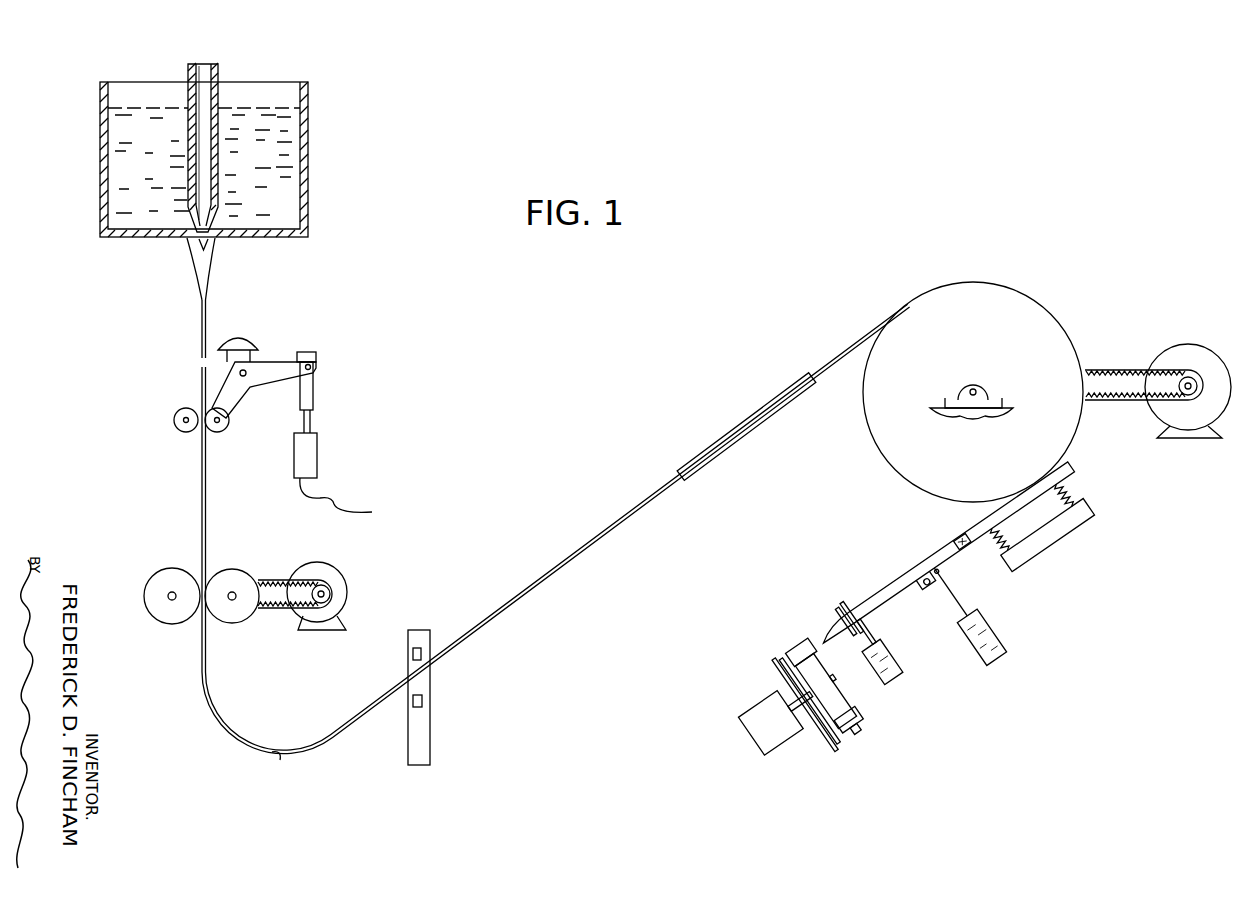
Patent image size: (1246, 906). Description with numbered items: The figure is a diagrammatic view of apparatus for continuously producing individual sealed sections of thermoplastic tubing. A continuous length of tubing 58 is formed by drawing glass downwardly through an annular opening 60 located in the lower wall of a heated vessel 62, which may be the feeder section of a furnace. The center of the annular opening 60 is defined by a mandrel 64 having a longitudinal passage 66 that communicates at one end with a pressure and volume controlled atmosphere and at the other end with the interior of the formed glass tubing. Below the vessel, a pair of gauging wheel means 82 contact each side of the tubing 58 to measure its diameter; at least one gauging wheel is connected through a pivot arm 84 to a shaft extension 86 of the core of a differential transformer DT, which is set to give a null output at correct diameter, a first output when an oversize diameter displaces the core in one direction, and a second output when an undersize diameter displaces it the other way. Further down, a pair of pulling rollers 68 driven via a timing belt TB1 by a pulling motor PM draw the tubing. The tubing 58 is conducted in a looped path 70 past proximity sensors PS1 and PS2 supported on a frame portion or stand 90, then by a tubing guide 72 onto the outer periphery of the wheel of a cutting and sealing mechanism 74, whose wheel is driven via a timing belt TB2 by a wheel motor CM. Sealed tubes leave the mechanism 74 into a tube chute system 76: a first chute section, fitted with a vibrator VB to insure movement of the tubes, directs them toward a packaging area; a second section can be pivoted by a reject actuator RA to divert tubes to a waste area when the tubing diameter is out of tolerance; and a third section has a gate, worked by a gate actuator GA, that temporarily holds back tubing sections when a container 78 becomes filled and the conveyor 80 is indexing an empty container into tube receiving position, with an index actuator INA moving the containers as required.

The tubing 58 is at (200, 492).
The annular opening 60 is at (209, 241).
The heated vessel 62 is at (308, 170).
The mandrel 64 is at (188, 72).
The longitudinal passage 66 is at (204, 74).
The pulling rollers 68 is at (150, 572).
The looped path 70 is at (280, 756).
The tubing guide 72 is at (712, 440).
The cutting and sealing mechanism 74 is at (1025, 278).
The tube chute system 76 is at (918, 542).
The container 78 is at (800, 640).
The conveyor 80 is at (766, 680).
The gauging wheel means 82 is at (172, 410).
The pivot arm 84 is at (276, 358).
The shaft extension 86 is at (318, 388).
The frame portion or stand 90 is at (430, 680).
The differential transformer DT is at (320, 450).
The pulling motor PM is at (316, 566).
The timing belt TB1 is at (280, 612).
The timing belt TB2 is at (1114, 369).
The wheel motor CM is at (1190, 345).
The proximity sensor PS1 is at (417, 647).
The proximity sensor PS2 is at (422, 708).
The vibrator VB is at (1052, 550).
The reject actuator RA is at (1000, 645).
The gate actuator GA is at (895, 663).
The index actuator INA is at (740, 735).